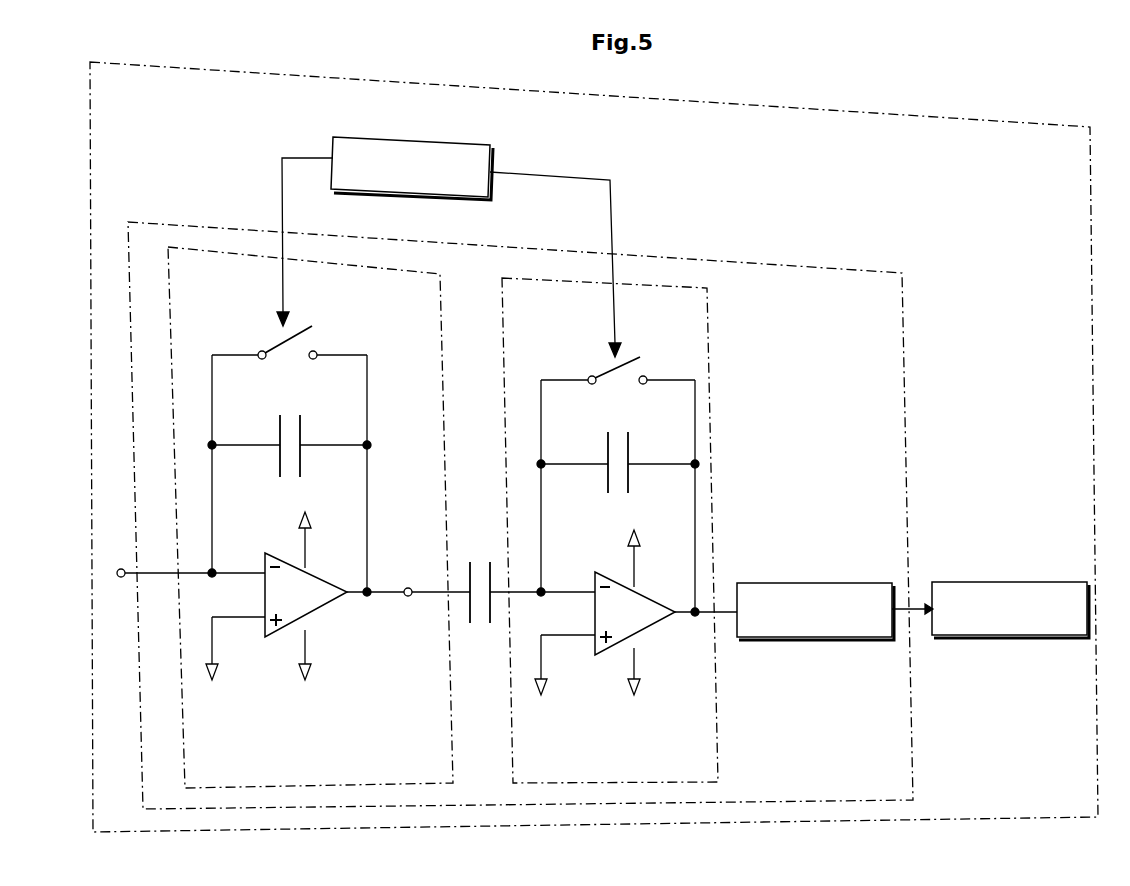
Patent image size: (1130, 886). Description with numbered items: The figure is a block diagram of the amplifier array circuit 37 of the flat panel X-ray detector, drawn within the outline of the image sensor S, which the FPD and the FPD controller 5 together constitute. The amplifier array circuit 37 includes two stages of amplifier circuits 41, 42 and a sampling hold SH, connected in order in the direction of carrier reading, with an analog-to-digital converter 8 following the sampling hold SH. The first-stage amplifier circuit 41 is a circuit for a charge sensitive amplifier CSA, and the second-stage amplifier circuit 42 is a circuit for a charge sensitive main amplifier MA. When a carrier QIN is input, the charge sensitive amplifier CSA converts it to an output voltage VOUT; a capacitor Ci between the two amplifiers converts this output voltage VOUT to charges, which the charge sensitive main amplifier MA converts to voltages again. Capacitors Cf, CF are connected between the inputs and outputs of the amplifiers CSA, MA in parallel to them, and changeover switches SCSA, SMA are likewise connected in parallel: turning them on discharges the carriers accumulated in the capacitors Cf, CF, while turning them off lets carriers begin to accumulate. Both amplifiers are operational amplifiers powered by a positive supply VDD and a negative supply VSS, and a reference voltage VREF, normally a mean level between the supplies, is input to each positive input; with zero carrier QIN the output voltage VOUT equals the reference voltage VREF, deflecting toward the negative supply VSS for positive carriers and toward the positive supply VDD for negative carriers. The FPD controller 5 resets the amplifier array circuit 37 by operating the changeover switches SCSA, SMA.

The image sensor S is at (108, 91).
The amplifier array circuit 37 is at (156, 252).
The amplifier circuit 41 is at (201, 290).
The amplifier circuit 42 is at (537, 312).
The FPD controller 5 is at (435, 138).
The analog-to-digital converter 8 is at (1020, 582).
The sampling hold SH is at (835, 582).
The charge sensitive amplifier CSA is at (328, 598).
The charge sensitive main amplifier MA is at (655, 618).
The changeover switch SCSA is at (297, 351).
The changeover switch SMA is at (631, 384).
The capacitor Cf is at (283, 474).
The capacitor CF is at (618, 502).
The capacitor Ci is at (486, 620).
The carrier QIN is at (155, 552).
The output voltage VOUT is at (430, 606).
The positive supply VDD is at (468, 538).
The reference voltage VREF is at (374, 677).
The negative supply VSS is at (467, 683).